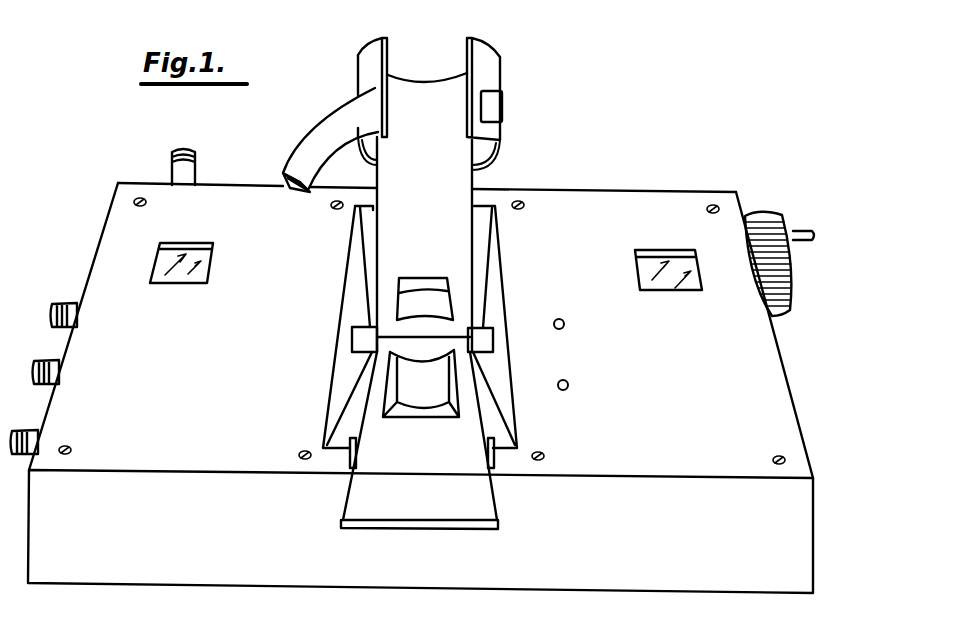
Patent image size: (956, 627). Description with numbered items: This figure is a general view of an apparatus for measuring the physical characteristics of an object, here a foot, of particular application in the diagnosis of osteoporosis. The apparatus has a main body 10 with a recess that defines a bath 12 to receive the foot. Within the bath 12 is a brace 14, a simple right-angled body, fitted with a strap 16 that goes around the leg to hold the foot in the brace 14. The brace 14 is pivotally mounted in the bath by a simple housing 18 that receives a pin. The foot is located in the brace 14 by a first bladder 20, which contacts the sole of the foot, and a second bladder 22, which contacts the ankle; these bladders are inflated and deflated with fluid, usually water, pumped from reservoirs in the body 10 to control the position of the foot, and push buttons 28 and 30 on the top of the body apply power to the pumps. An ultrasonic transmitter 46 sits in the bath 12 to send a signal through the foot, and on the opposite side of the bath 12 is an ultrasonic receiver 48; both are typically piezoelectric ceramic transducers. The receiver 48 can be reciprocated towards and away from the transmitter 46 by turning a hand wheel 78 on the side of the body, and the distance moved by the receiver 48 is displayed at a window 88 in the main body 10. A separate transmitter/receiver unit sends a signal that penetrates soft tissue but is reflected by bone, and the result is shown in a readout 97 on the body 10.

The main body 10 is at (110, 273).
The bath 12 is at (354, 303).
The brace 14 is at (431, 97).
The strap 16 is at (492, 68).
The housing 18 is at (355, 452).
The first bladder 20 is at (423, 396).
The second bladder 22 is at (422, 296).
The push button 28 is at (564, 324).
The push button 30 is at (568, 385).
The ultrasonic transmitter 46 is at (362, 338).
The ultrasonic receiver 48 is at (483, 343).
The hand wheel 78 is at (790, 298).
The window 88 is at (672, 256).
The readout 97 is at (197, 246).